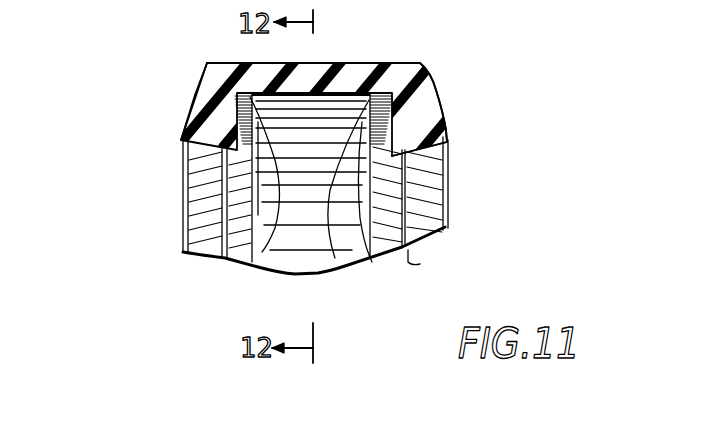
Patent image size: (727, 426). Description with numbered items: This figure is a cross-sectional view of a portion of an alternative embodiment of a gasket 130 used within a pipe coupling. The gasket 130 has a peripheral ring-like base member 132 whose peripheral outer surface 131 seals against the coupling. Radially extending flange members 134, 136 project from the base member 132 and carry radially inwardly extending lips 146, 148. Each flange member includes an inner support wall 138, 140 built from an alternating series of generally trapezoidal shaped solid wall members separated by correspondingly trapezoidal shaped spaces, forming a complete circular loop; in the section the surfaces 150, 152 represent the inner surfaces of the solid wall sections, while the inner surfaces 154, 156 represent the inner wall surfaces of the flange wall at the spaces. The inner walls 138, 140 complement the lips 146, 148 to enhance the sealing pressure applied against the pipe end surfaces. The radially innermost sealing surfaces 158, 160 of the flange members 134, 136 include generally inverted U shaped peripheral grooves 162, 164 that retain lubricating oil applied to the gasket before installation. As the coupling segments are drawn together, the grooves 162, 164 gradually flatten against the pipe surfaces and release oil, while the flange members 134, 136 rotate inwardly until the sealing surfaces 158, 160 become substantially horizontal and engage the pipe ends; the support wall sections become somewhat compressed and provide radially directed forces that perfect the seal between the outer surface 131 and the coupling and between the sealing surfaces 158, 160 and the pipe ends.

The gasket 130 is at (437, 67).
The peripheral outer surface 131 is at (330, 62).
The peripheral ring-like base member 132 is at (360, 62).
The radially extending flange member 134 is at (187, 110).
The radially extending flange member 136 is at (425, 107).
The inner support wall 138 is at (203, 72).
The inner support wall 140 is at (430, 130).
The radially inwardly extending lip 146 is at (250, 163).
The radially inwardly extending lip 148 is at (410, 188).
The inner surface of solid wall section 150 is at (258, 215).
The inner surface of solid wall section 152 is at (372, 262).
The inner wall surface of flange wall 154 is at (262, 252).
The inner wall surface of flange wall 156 is at (335, 258).
The radially innermost sealing surface 158 is at (193, 152).
The radially innermost sealing surface 160 is at (447, 171).
The inverted U shaped peripheral groove 162 is at (213, 258).
The inverted U shaped peripheral groove 164 is at (420, 264).